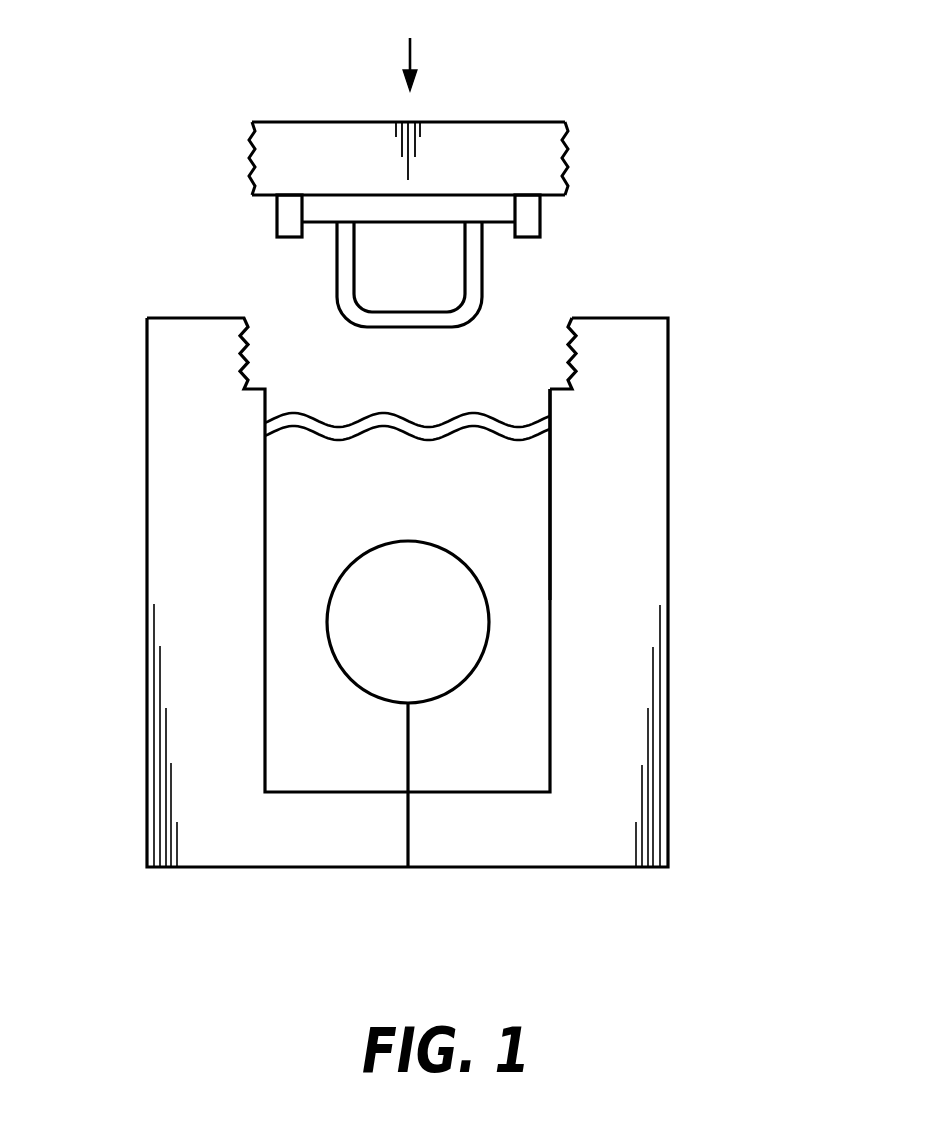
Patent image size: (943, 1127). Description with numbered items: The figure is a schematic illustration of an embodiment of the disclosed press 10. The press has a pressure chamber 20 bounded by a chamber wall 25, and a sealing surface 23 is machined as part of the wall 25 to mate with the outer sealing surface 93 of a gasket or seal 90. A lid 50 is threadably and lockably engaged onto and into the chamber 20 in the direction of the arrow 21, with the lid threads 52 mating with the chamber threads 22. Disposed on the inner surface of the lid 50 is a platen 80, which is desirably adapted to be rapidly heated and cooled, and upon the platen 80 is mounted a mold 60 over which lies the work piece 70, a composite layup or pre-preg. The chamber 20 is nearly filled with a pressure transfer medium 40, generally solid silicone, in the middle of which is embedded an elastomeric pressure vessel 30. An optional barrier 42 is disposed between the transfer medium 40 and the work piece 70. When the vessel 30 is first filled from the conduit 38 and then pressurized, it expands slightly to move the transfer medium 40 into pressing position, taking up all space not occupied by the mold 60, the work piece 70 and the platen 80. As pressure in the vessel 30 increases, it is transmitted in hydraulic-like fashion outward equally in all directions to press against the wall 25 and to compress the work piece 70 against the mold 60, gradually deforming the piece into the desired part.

The press 10 is at (713, 522).
The pressure chamber 20 is at (672, 410).
The arrow 21 is at (412, 68).
The chamber threads 22 is at (558, 338).
The sealing surface 23 is at (550, 395).
The chamber wall 25 is at (146, 695).
The elastomeric pressure vessel 30 is at (492, 642).
The conduit 38 is at (410, 820).
The pressure transfer medium 40 is at (485, 486).
The barrier 42 is at (287, 415).
The lid 50 is at (457, 121).
The lid threads 52 is at (565, 153).
The mold 60 is at (353, 277).
The work piece 70 is at (483, 300).
The platen 80 is at (337, 193).
The gasket or seal 90 is at (273, 226).
The outer sealing surface 93 is at (542, 222).